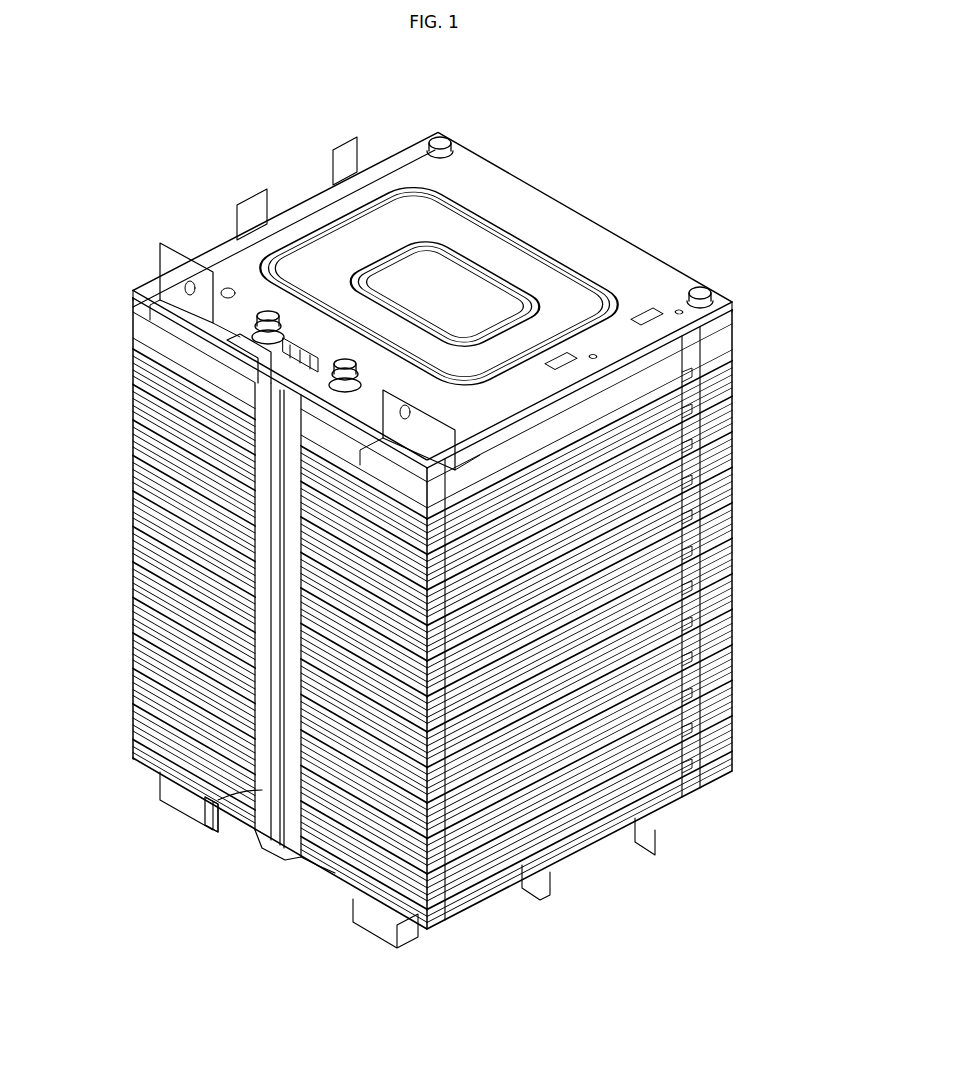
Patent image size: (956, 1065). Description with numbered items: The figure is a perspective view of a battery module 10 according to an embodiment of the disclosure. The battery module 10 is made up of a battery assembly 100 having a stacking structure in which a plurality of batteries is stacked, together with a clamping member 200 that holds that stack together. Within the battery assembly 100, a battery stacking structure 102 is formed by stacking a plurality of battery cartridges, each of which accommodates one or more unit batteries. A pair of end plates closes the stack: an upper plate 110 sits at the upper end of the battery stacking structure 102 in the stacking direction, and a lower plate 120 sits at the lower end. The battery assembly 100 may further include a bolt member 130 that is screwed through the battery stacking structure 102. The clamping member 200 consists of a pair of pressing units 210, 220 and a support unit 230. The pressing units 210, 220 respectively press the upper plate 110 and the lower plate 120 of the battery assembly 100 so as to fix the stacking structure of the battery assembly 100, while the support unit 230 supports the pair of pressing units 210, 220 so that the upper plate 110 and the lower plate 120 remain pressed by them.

The battery module 10 is at (178, 105).
The battery assembly 100 is at (745, 512).
The battery stacking structure 102 is at (737, 399).
The upper plate 110 is at (560, 228).
The lower plate 120 is at (672, 808).
The bolt member 130 is at (440, 138).
The clamping member 200 is at (263, 852).
The pressing unit 210 is at (227, 342).
The pressing unit 220 is at (318, 868).
The support unit 230 is at (210, 802).